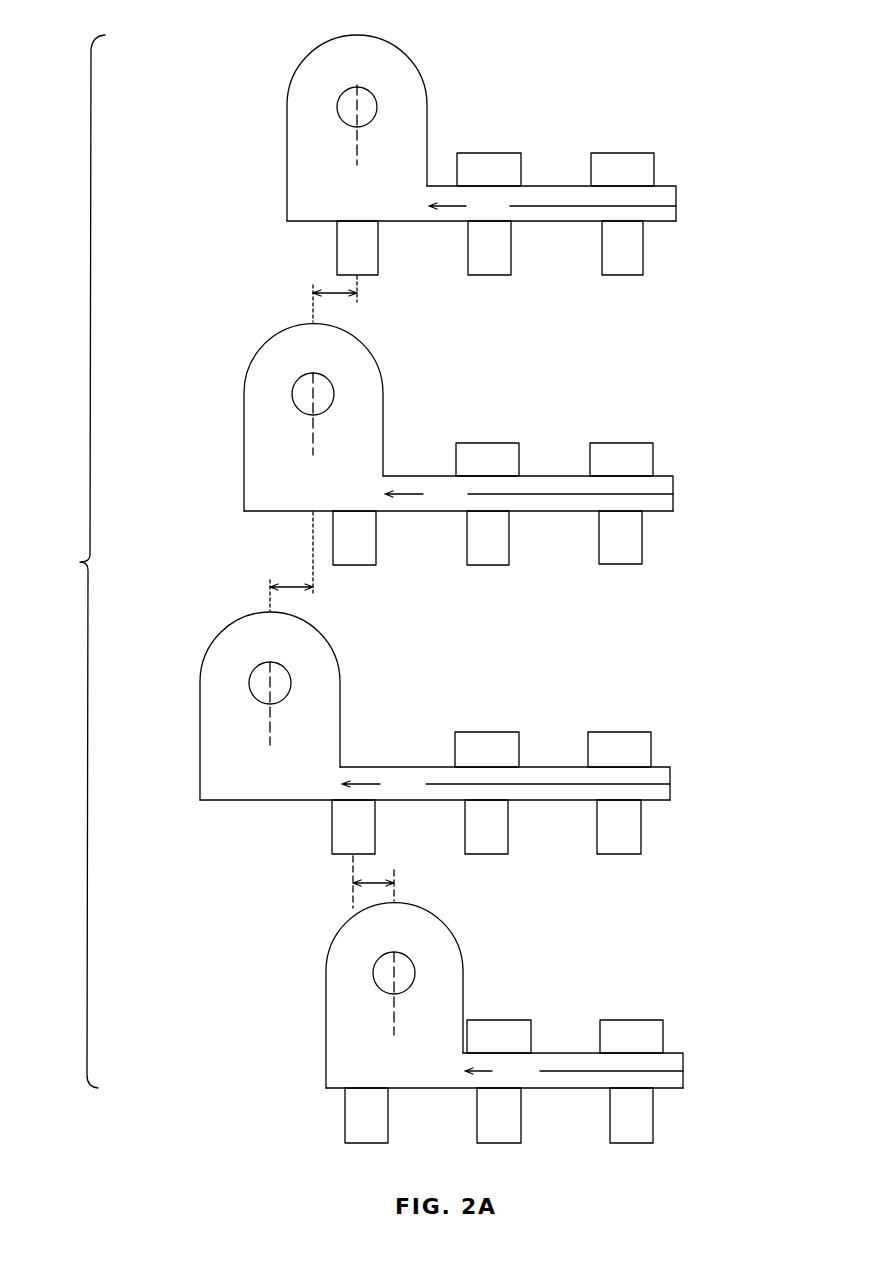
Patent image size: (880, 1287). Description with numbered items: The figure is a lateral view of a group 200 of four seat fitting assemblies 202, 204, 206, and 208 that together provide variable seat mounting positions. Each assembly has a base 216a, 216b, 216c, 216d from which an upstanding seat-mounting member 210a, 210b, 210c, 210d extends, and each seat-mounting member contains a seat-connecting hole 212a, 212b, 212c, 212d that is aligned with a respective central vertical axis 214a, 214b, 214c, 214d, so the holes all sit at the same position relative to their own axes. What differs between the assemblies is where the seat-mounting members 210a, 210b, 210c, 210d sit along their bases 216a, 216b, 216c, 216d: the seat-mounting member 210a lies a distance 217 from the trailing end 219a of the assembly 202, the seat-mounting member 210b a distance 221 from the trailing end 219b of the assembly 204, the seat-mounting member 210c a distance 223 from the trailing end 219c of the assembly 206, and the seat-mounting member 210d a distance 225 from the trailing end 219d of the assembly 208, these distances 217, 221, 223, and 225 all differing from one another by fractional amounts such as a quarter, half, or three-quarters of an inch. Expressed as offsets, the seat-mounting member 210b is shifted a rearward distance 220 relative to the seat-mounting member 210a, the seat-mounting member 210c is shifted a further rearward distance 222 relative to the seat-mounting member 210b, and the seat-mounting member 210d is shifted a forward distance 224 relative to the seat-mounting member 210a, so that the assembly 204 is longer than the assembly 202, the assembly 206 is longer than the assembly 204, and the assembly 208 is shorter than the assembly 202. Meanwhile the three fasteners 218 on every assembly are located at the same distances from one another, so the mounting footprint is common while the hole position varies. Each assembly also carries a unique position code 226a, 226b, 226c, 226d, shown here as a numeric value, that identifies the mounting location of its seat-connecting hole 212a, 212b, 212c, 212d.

The group of seat fitting assemblies 200 is at (68, 561).
The seat fitting assembly 202 is at (473, 60).
The seat fitting assembly 204 is at (430, 350).
The seat fitting assembly 206 is at (385, 642).
The seat fitting assembly 208 is at (480, 932).
The seat-mounting member 210a is at (287, 168).
The seat-mounting member 210b is at (244, 462).
The seat-mounting member 210c is at (200, 745).
The seat-mounting member 210d is at (326, 1018).
The seat-connecting hole 212a is at (372, 107).
The seat-connecting hole 212b is at (328, 394).
The seat-connecting hole 212c is at (286, 683).
The seat-connecting hole 212d is at (397, 973).
The central vertical axis 214a is at (358, 145).
The central vertical axis 214b is at (314, 435).
The central vertical axis 214c is at (272, 725).
The central vertical axis 214d is at (395, 1015).
The base 216a is at (676, 206).
The base 216b is at (673, 494).
The base 216c is at (670, 784).
The base 216d is at (683, 1071).
The distance 217 is at (552, 206).
The fasteners 218 is at (487, 153).
The trailing end 219a is at (676, 222).
The trailing end 219b is at (673, 512).
The trailing end 219c is at (670, 801).
The trailing end 219d is at (683, 1089).
The rearward distance 220 is at (345, 293).
The distance 221 is at (529, 494).
The rearward distance 222 is at (290, 586).
The distance 223 is at (506, 784).
The forward distance 224 is at (375, 880).
The distance 225 is at (574, 1071).
The position code 226a is at (365, 58).
The position code 226b is at (321, 348).
The position code 226c is at (278, 636).
The position code 226d is at (400, 930).